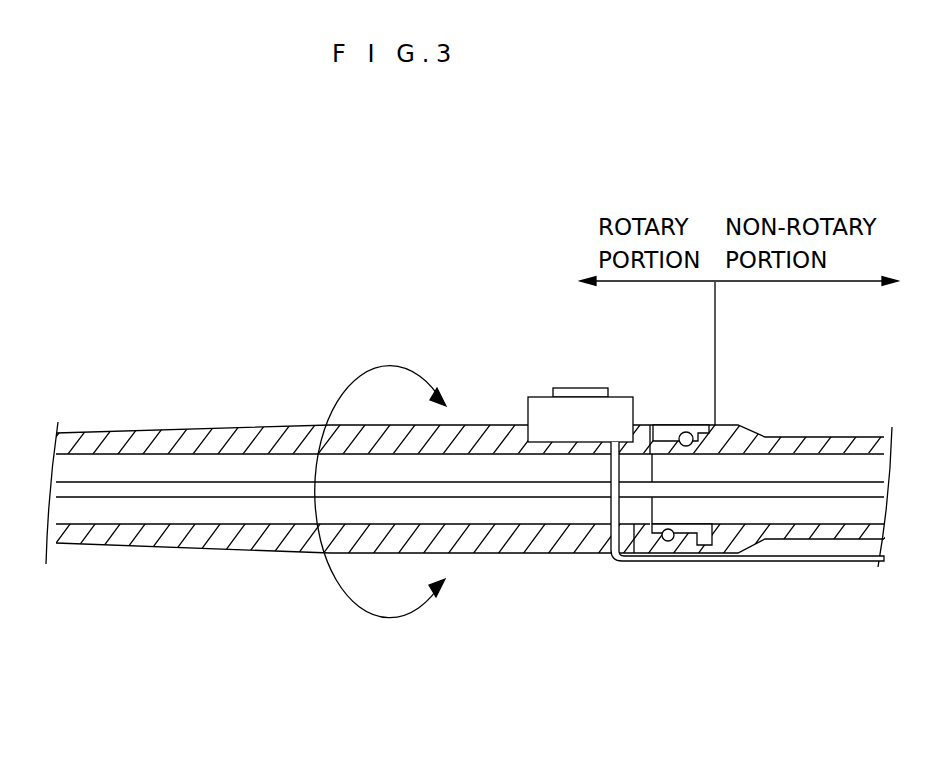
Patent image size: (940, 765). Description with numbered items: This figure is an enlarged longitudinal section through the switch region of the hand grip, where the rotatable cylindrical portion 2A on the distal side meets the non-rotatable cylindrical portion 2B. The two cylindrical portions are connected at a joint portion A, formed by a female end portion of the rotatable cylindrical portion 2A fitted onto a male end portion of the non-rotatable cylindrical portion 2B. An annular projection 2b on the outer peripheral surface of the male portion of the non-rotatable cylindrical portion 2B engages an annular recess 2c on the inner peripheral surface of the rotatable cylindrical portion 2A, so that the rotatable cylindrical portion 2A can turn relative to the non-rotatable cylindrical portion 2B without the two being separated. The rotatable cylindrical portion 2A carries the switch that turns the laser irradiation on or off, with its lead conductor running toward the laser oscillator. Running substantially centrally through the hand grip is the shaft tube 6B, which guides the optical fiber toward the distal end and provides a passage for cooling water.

The rotatable cylindrical portion 2A is at (516, 546).
The non-rotatable cylindrical portion 2B is at (826, 440).
The annular projection 2b is at (675, 425).
The annular recess 2c is at (705, 433).
The shaft tube 6B is at (235, 482).
The joint portion A is at (687, 406).